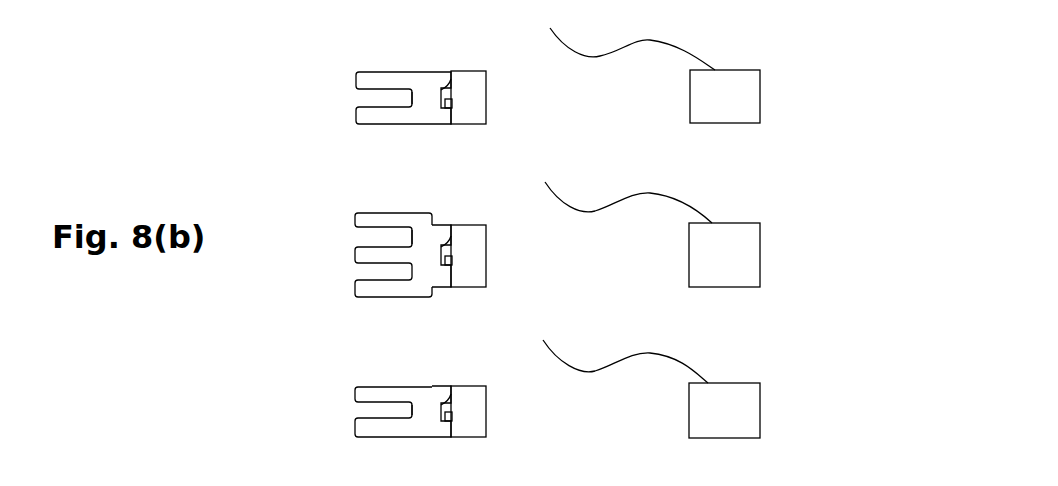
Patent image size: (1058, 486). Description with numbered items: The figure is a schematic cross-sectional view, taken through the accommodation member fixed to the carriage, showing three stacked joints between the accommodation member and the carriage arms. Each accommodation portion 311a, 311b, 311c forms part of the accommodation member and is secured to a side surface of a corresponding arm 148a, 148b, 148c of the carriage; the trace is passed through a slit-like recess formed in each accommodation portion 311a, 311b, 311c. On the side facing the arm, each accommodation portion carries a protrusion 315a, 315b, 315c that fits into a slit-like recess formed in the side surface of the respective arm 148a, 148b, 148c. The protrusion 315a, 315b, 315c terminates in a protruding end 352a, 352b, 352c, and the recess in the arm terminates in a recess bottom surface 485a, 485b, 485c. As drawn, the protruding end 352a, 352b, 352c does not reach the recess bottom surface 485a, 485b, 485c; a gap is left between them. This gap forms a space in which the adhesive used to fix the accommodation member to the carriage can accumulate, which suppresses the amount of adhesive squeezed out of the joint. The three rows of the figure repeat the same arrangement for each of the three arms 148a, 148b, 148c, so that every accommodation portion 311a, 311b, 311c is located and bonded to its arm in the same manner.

The accommodation portion 311a is at (377, 72).
The protrusion 315a is at (433, 97).
The protruding end 352a is at (444, 72).
The recess bottom surface 485a is at (452, 106).
The arm 148a is at (464, 71).
The accommodation portion 311b is at (373, 213).
The protrusion 315b is at (437, 257).
The protruding end 352b is at (442, 225).
The recess bottom surface 485b is at (452, 266).
The arm 148b is at (458, 225).
The accommodation portion 311c is at (375, 387).
The protrusion 315c is at (437, 410).
The protruding end 352c is at (442, 386).
The recess bottom surface 485c is at (452, 422).
The arm 148c is at (462, 386).